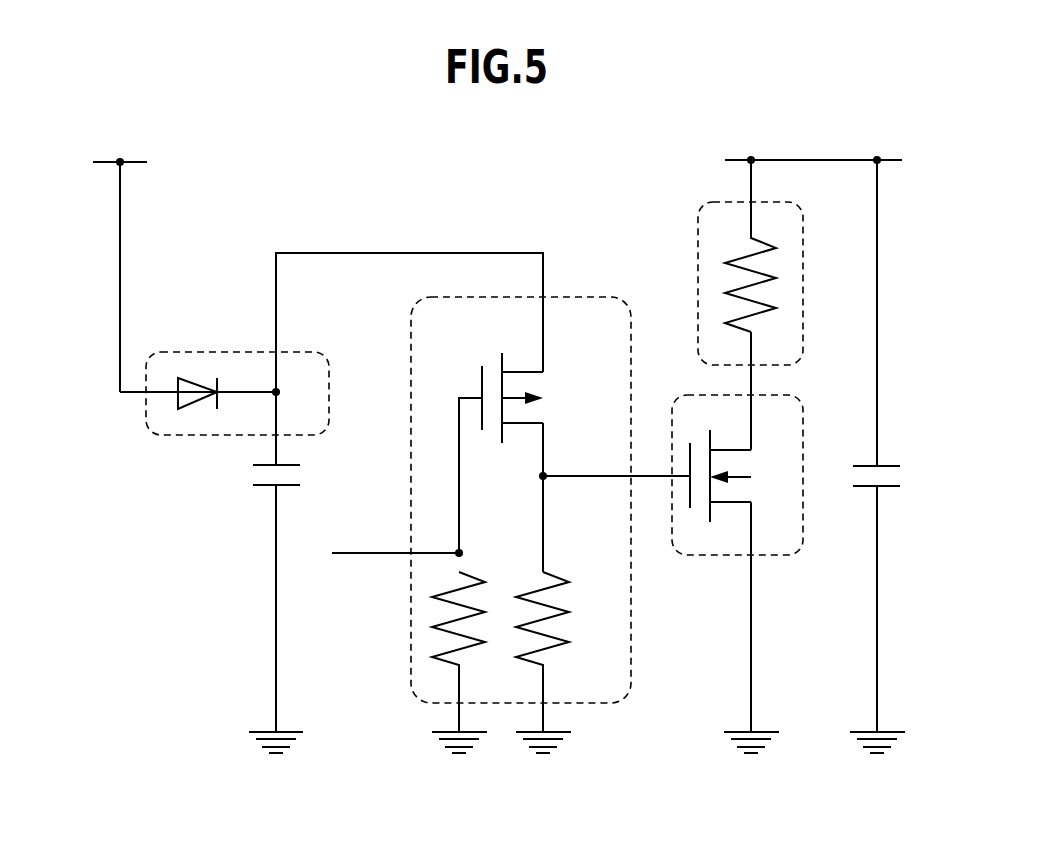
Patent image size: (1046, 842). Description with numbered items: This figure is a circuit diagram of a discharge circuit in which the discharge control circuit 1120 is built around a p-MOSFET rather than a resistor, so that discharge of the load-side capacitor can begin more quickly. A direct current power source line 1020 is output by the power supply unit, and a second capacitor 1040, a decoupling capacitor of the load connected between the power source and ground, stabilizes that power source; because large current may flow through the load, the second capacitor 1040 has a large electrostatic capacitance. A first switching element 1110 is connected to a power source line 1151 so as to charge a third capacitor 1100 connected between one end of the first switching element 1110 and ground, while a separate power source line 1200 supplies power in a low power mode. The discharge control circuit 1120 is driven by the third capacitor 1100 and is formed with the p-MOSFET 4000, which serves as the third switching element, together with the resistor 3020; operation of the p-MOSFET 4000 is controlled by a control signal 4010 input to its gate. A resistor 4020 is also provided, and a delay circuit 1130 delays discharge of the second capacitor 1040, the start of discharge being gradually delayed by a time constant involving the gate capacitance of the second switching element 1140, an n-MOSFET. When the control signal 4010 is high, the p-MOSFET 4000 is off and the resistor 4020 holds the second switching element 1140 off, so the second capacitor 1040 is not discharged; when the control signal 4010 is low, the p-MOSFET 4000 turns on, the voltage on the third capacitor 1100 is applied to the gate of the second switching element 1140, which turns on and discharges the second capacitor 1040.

The power source line 1200 is at (121, 219).
The first switching element 1110 is at (200, 352).
The third capacitor 1100 is at (266, 488).
The power source line 1151 is at (400, 252).
The discharge control circuit 1120 is at (410, 327).
The p-MOSFET 4000 is at (500, 445).
The control signal 4010 is at (362, 556).
The resistor 3020 is at (470, 648).
The resistor 4020 is at (554, 648).
The direct current power source line 1020 is at (810, 158).
The delay circuit 1130 is at (698, 252).
The second switching element 1140 is at (708, 557).
The second capacitor 1040 is at (868, 489).